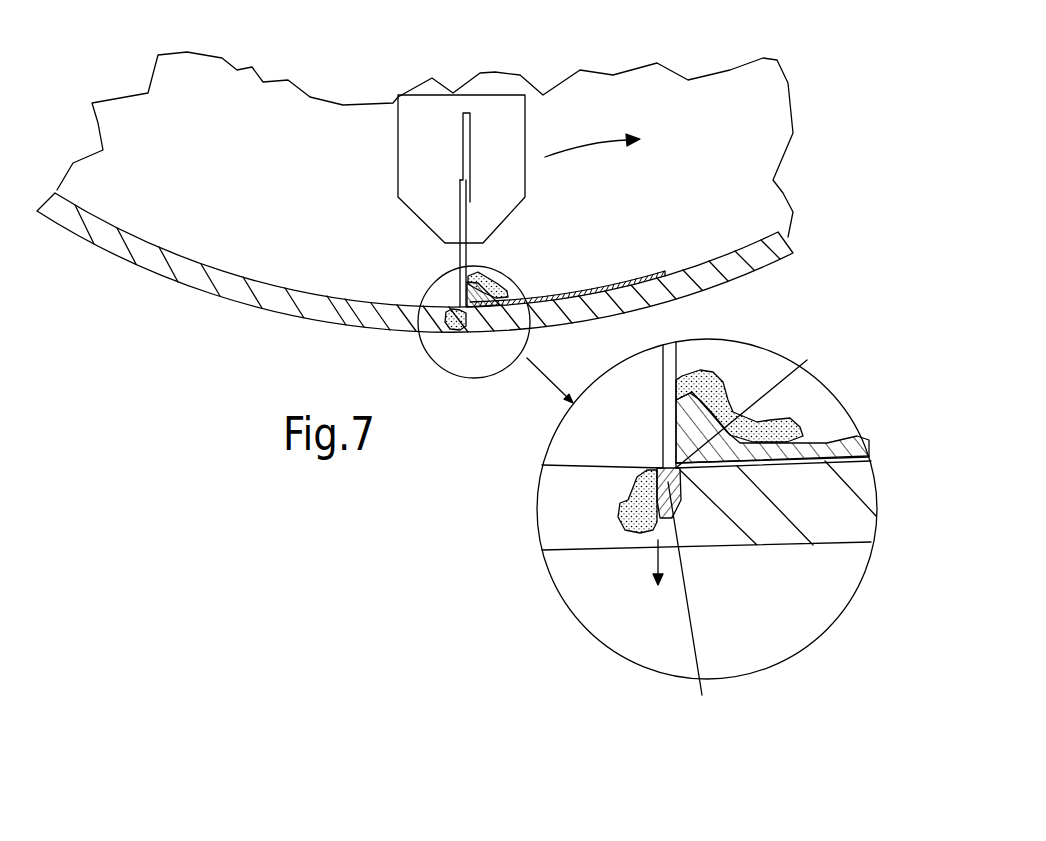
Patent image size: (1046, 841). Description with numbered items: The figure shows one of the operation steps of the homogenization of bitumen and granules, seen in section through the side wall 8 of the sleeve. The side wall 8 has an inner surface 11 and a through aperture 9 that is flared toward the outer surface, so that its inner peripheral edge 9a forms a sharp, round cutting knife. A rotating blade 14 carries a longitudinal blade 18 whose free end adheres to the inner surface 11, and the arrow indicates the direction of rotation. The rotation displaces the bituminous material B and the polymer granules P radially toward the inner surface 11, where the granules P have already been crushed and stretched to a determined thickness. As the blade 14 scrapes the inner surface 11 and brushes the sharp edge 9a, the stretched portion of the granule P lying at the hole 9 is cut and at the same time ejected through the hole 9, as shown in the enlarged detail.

The side wall 8 is at (112, 242).
The through aperture 9 is at (380, 320).
The inner peripheral edge 9a is at (684, 474).
The inner surface 11 is at (191, 250).
The blade 14 is at (537, 141).
The longitudinal blade 18 is at (462, 252).
The bituminous material B is at (738, 403).
The polymer granules P is at (745, 528).